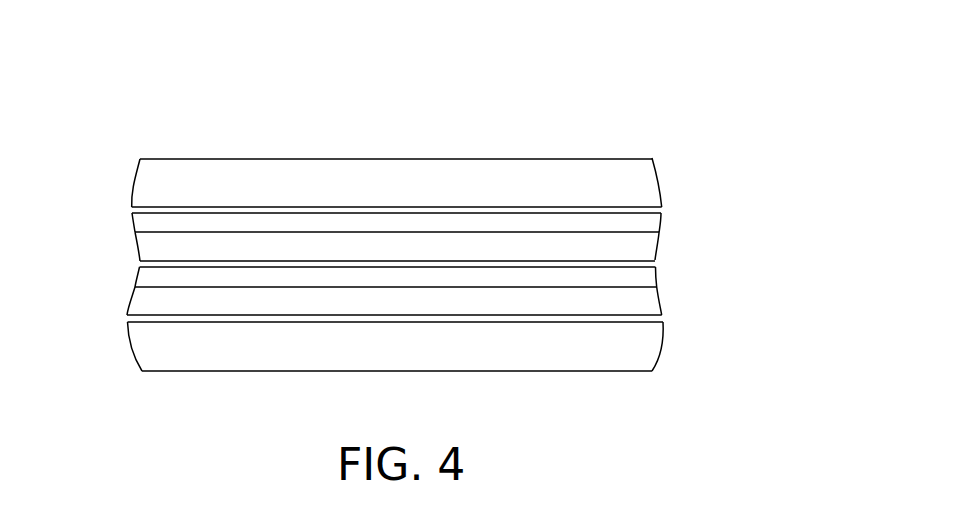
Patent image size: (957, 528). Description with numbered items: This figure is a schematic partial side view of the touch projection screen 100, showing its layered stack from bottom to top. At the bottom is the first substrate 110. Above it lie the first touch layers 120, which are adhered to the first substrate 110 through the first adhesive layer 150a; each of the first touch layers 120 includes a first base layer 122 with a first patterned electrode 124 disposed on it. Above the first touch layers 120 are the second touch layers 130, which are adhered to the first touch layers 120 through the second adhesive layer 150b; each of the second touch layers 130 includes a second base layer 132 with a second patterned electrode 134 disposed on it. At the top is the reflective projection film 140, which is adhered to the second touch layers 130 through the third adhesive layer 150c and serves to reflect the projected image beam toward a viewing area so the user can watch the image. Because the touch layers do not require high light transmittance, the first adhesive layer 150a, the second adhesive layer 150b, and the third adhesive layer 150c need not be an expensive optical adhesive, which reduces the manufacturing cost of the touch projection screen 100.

The touch projection screen 100 is at (680, 443).
The first substrate 110 is at (638, 351).
The first touch layers 120 is at (757, 263).
The first base layer 122 is at (637, 300).
The first patterned electrode 124 is at (640, 276).
The second touch layers 130 is at (757, 170).
The second base layer 132 is at (637, 245).
The second patterned electrode 134 is at (640, 220).
The reflective projection film 140 is at (637, 182).
The first adhesive layer 150a is at (157, 320).
The second adhesive layer 150b is at (157, 265).
The third adhesive layer 150c is at (157, 210).